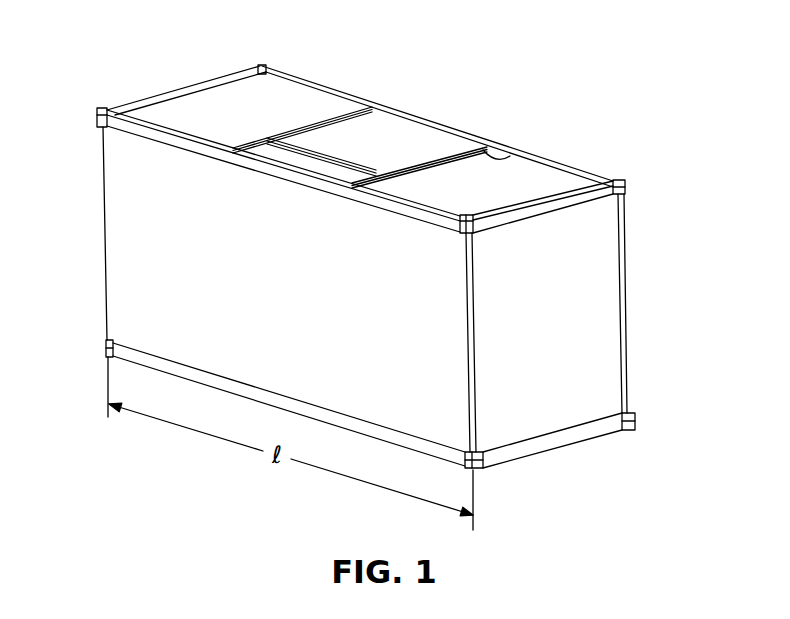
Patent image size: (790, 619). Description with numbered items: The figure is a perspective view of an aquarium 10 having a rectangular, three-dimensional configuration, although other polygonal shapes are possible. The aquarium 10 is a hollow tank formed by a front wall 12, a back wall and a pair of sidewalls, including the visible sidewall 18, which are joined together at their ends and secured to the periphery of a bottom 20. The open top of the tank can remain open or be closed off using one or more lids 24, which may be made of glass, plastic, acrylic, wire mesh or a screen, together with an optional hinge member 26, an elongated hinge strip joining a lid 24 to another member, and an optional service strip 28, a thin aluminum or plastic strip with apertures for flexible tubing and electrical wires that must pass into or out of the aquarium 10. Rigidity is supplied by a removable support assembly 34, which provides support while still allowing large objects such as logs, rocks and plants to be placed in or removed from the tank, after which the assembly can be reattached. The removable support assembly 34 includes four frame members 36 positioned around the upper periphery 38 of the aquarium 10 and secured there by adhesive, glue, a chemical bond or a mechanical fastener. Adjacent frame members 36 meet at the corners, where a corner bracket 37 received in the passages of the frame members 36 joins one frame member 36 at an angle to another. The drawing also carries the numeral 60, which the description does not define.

The aquarium 10 is at (612, 37).
The front wall 12 is at (280, 297).
The sidewall 18 is at (537, 319).
The bottom 20 is at (425, 452).
The lid 24 is at (228, 118).
The hinge member 26 is at (318, 150).
The service strip 28 is at (422, 130).
The removable support assembly 34 is at (380, 98).
The frame member 36 is at (122, 122).
The corner bracket 37 is at (261, 67).
The upper periphery 38 is at (165, 88).
The cross member connector 60 is at (313, 123).